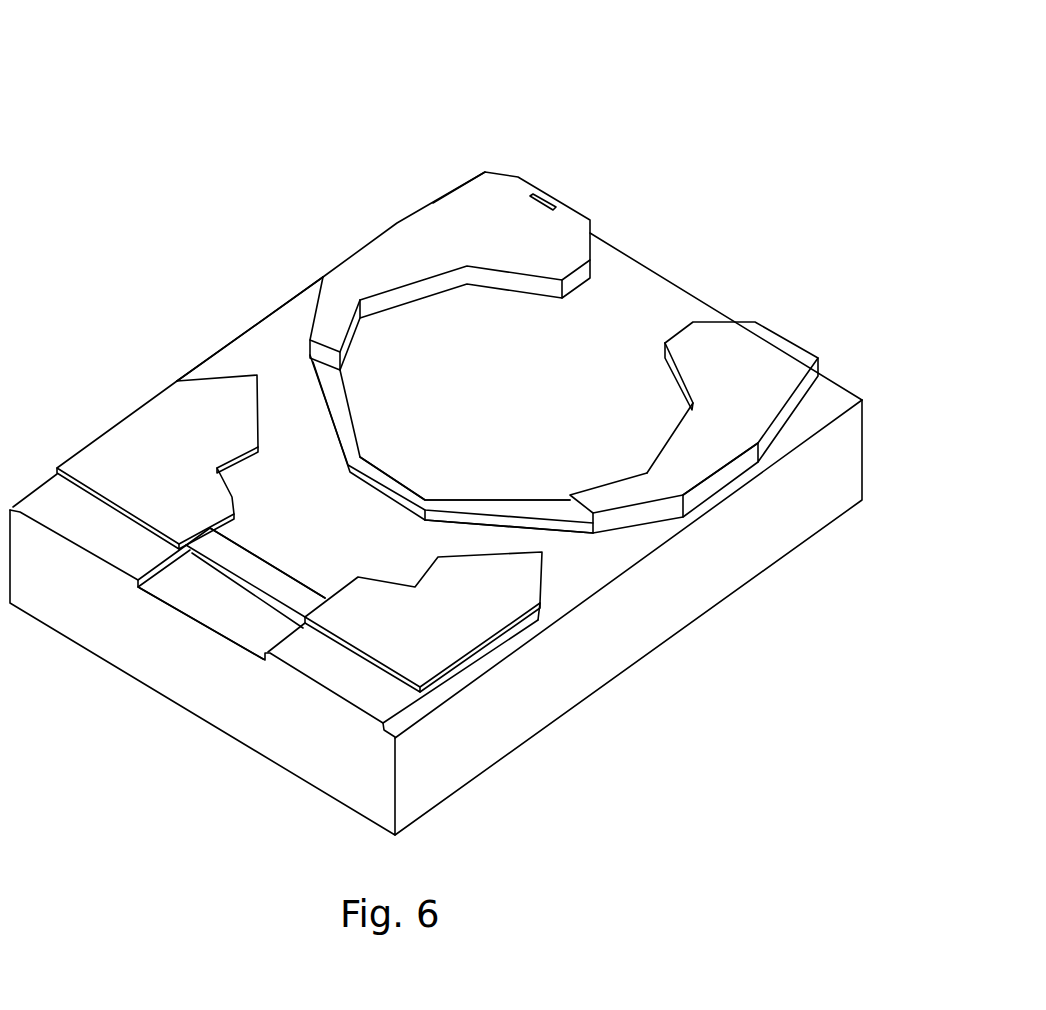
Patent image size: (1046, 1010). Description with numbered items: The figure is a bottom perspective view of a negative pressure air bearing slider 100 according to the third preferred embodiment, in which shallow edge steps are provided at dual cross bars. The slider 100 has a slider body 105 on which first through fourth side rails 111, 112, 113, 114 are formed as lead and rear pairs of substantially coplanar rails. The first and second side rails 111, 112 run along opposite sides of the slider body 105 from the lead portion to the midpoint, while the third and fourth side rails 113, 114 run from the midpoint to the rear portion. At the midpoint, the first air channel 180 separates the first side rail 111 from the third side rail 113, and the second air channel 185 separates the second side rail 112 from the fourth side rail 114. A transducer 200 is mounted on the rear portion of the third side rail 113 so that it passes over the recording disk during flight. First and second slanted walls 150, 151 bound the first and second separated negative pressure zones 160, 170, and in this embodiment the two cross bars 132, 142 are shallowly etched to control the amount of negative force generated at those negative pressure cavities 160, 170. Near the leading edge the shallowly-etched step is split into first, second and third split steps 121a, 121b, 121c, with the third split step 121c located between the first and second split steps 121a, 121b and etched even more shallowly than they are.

The slider 100 is at (677, 127).
The slider body 105 is at (647, 670).
The first side rail 111 is at (138, 447).
The second side rail 112 is at (422, 628).
The third side rail 113 is at (458, 208).
The fourth side rail 114 is at (747, 363).
The first split shallowly-etched step 121a is at (88, 523).
The second split shallowly-etched step 121b is at (322, 665).
The third split shallowly-etched step 121c is at (195, 603).
The first cross bar 132 is at (258, 568).
The second cross bar 142 is at (395, 482).
The first slanted wall 150 is at (343, 283).
The second slanted wall 151 is at (657, 490).
The first negative pressure zone 160 is at (277, 546).
The second negative pressure zone 170 is at (460, 436).
The first air channel 180 is at (293, 413).
The second air channel 185 is at (527, 537).
The transducer 200 is at (542, 192).